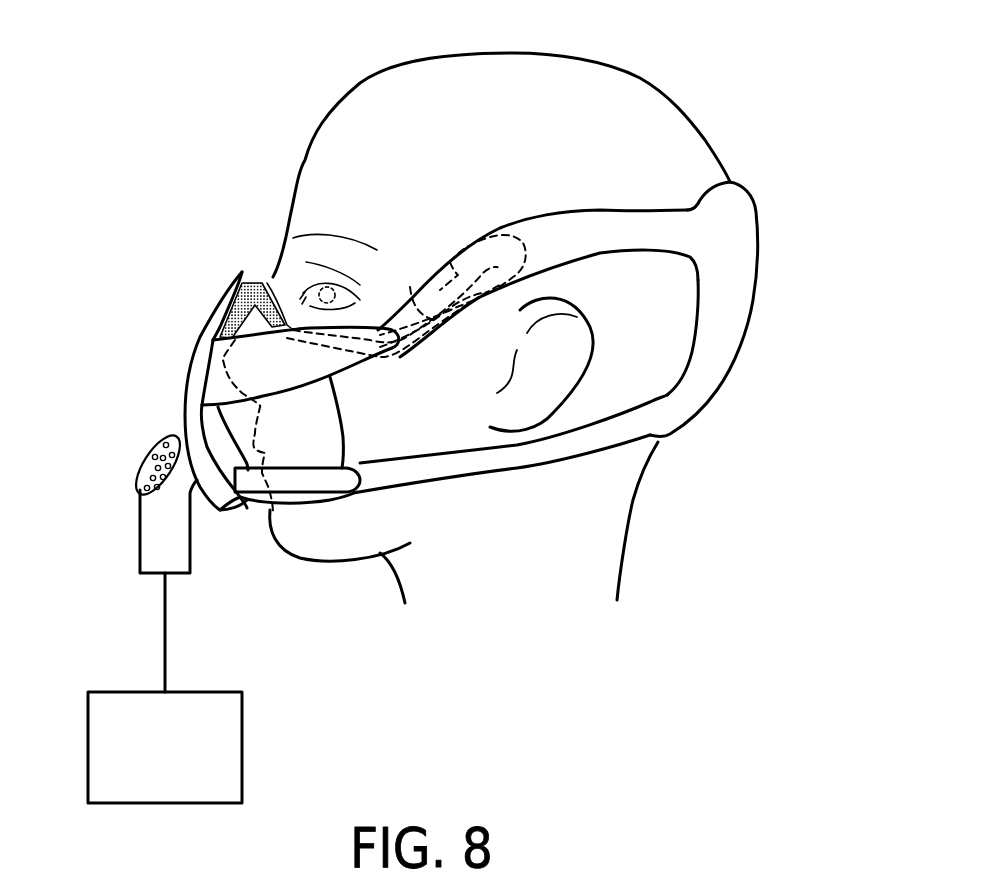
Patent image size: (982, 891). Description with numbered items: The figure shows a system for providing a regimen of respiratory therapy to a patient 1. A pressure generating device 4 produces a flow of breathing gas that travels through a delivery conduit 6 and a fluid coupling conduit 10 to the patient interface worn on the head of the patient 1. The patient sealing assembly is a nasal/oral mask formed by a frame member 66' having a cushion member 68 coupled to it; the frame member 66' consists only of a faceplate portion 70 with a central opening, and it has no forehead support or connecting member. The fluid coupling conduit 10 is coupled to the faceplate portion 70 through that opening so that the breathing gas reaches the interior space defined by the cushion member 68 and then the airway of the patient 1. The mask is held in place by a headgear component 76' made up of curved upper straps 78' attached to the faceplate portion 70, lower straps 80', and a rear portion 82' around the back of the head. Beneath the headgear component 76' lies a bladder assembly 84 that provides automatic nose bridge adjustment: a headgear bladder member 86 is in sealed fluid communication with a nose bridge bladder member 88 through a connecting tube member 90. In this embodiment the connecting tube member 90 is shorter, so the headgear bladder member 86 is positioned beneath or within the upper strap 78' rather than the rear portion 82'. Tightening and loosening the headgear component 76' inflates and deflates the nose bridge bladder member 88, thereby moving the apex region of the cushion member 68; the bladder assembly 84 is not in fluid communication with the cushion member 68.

The patient 1 is at (643, 107).
The pressure generating device 4 is at (242, 748).
The delivery conduit 6 is at (163, 645).
The fluid coupling conduit 10 is at (162, 540).
The frame member 66' is at (185, 388).
The cushion member 68 is at (323, 420).
The faceplate portion 70 is at (192, 412).
The headgear component 76' is at (742, 278).
The upper strap 78' is at (538, 246).
The lower strap 80' is at (510, 478).
The rear portion 82' is at (743, 337).
The bladder assembly 84 is at (450, 262).
The headgear bladder member 86 is at (495, 262).
The nose bridge bladder member 88 is at (257, 283).
The connecting tube member 90 is at (410, 287).